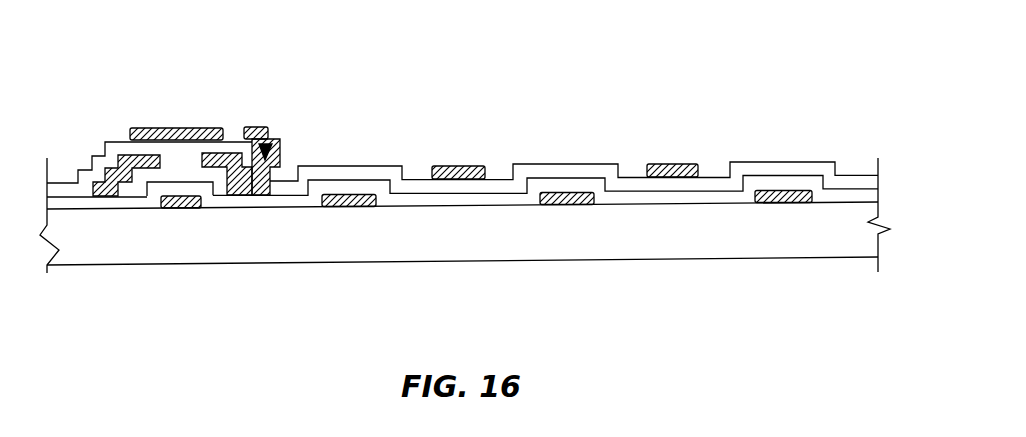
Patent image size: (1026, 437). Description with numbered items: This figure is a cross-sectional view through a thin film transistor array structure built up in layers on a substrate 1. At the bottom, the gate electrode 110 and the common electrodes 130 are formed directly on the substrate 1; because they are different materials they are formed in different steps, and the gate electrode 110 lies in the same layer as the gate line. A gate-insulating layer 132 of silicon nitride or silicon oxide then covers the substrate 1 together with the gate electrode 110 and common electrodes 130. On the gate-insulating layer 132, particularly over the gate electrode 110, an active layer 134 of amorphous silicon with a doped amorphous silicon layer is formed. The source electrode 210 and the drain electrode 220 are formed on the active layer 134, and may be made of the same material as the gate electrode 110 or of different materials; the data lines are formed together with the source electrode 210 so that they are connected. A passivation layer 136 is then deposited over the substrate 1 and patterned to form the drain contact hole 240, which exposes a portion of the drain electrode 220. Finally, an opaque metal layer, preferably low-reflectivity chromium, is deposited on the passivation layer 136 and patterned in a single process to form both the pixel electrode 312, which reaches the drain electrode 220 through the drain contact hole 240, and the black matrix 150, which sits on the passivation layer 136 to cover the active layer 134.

The substrate 1 is at (431, 241).
The gate electrode 110 is at (173, 207).
The common electrode 130 is at (348, 207).
The gate-insulating layer 132 is at (462, 197).
The active layer 134 is at (226, 183).
The passivation layer 136 is at (193, 152).
The black matrix 150 is at (218, 127).
The source electrode 210 is at (150, 160).
The drain electrode 220 is at (263, 195).
The drain contact hole 240 is at (267, 140).
The pixel electrode 312 is at (283, 149).